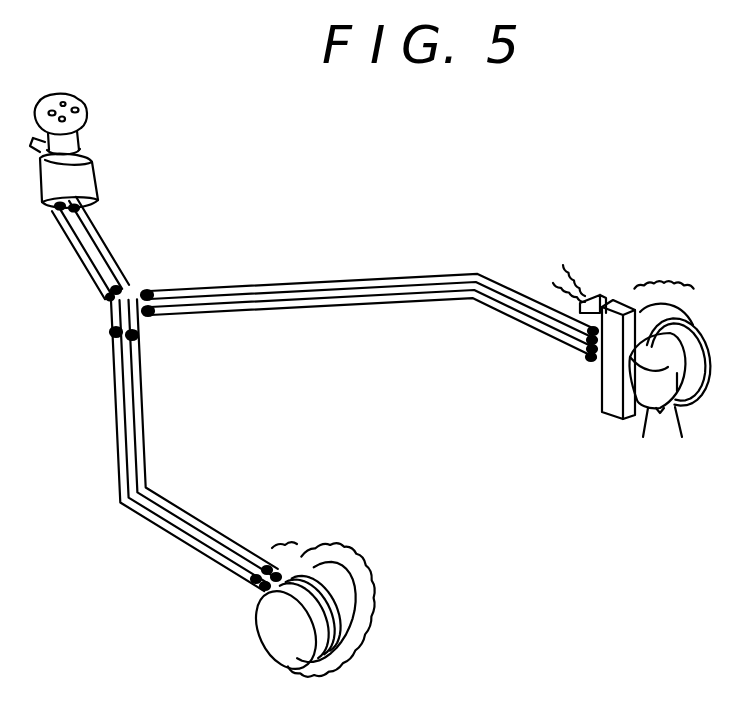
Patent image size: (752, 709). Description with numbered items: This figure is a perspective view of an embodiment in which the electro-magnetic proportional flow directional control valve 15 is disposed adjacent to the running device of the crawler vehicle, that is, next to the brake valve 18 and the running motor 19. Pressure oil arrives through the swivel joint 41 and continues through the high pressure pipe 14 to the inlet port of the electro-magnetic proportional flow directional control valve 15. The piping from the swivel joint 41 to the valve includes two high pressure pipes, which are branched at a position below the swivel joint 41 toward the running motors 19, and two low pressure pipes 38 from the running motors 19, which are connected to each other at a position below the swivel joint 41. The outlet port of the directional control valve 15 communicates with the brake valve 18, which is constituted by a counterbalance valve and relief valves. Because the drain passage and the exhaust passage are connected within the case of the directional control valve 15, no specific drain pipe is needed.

The swivel joint 41 is at (96, 128).
The low pressure pipes 38 is at (188, 288).
The high pressure pipe 14 is at (190, 312).
The electro-magnetic proportional flow directional control valve 15 is at (607, 429).
The brake valve 18 is at (652, 424).
The running motors 19 is at (672, 420).